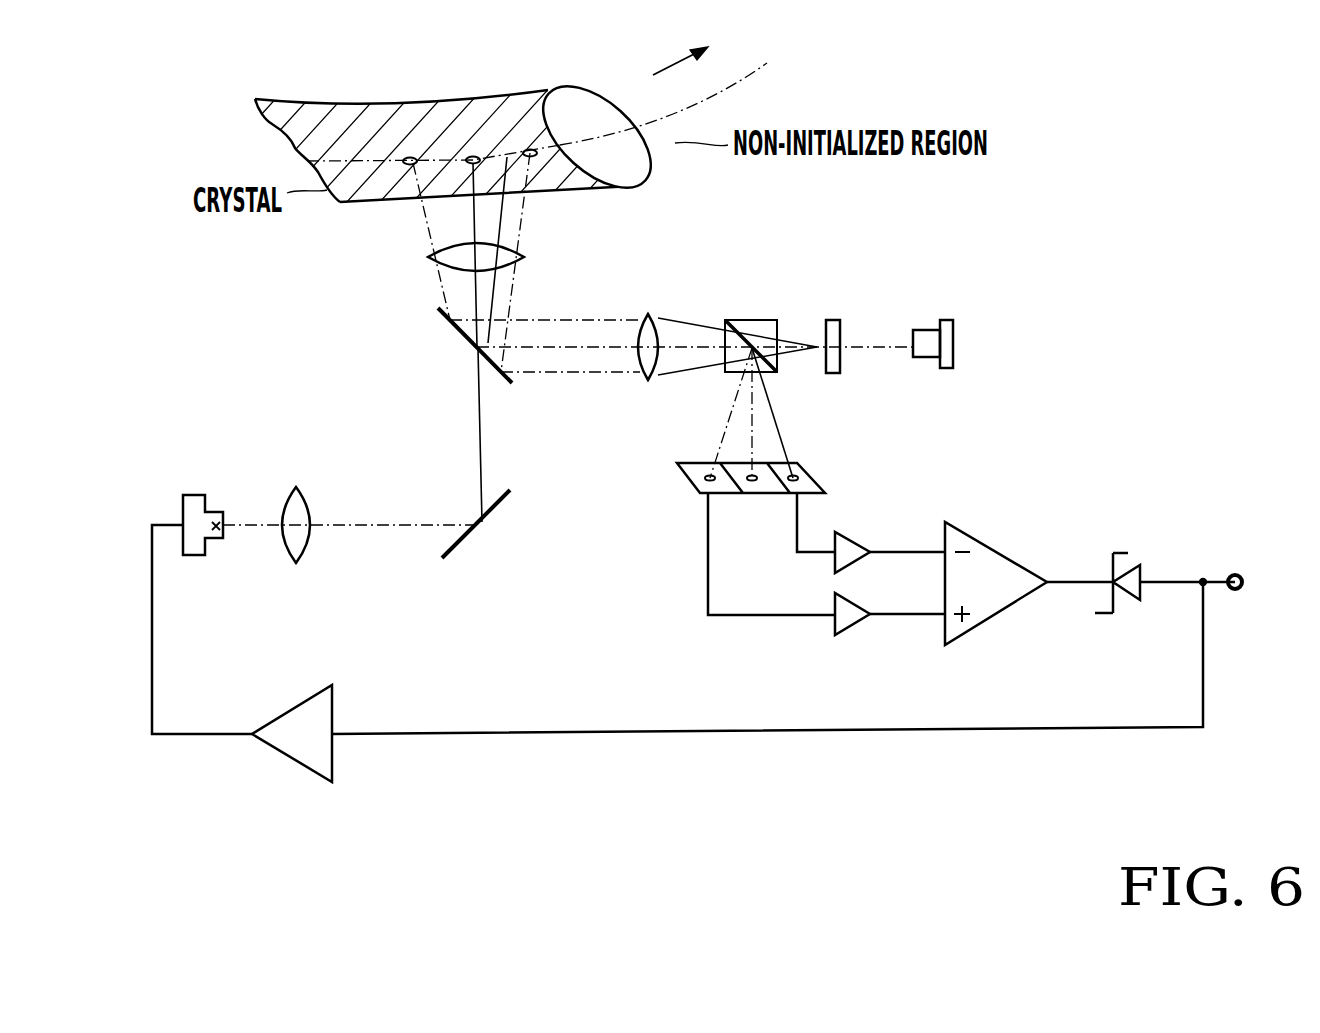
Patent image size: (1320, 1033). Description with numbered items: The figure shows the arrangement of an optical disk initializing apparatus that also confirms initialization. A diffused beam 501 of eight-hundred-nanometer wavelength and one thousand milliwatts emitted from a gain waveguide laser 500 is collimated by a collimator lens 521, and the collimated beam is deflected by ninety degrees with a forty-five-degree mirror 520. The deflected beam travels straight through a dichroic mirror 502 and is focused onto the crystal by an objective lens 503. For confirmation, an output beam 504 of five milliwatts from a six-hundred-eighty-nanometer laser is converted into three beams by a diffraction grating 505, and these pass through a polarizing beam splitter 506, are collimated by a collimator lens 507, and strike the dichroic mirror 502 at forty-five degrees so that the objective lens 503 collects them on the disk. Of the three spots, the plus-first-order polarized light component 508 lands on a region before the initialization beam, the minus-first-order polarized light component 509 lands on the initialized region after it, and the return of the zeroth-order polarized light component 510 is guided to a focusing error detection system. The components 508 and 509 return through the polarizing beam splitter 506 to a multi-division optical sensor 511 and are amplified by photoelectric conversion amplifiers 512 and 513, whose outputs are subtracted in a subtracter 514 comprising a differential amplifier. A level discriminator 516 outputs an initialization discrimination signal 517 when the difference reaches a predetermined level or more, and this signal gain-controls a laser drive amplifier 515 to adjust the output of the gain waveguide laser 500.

The gain waveguide laser 500 is at (195, 558).
The diffused beam 501 is at (395, 523).
The dichroic mirror 502 is at (462, 340).
The objective lens 503 is at (523, 258).
The output beam 504 is at (927, 330).
The diffraction grating 505 is at (832, 318).
The polarizing beam splitter 506 is at (778, 368).
The collimator lens 507 is at (648, 313).
The +1st-order polarized light component 508 is at (527, 221).
The −1st-order polarized light component 509 is at (470, 221).
The 0th-order polarized light component 510 is at (422, 228).
The multi-division optical sensor 511 is at (825, 478).
The photoelectric conversion amplifier 512 is at (855, 538).
The photoelectric conversion amplifier 513 is at (843, 630).
The subtracter 514 is at (973, 533).
The laser drive amplifier 515 is at (333, 757).
The level discriminator 516 is at (1140, 567).
The initialization discrimination signal 517 is at (1205, 628).
The 45° mirror 520 is at (468, 540).
The collimator lens 521 is at (300, 565).